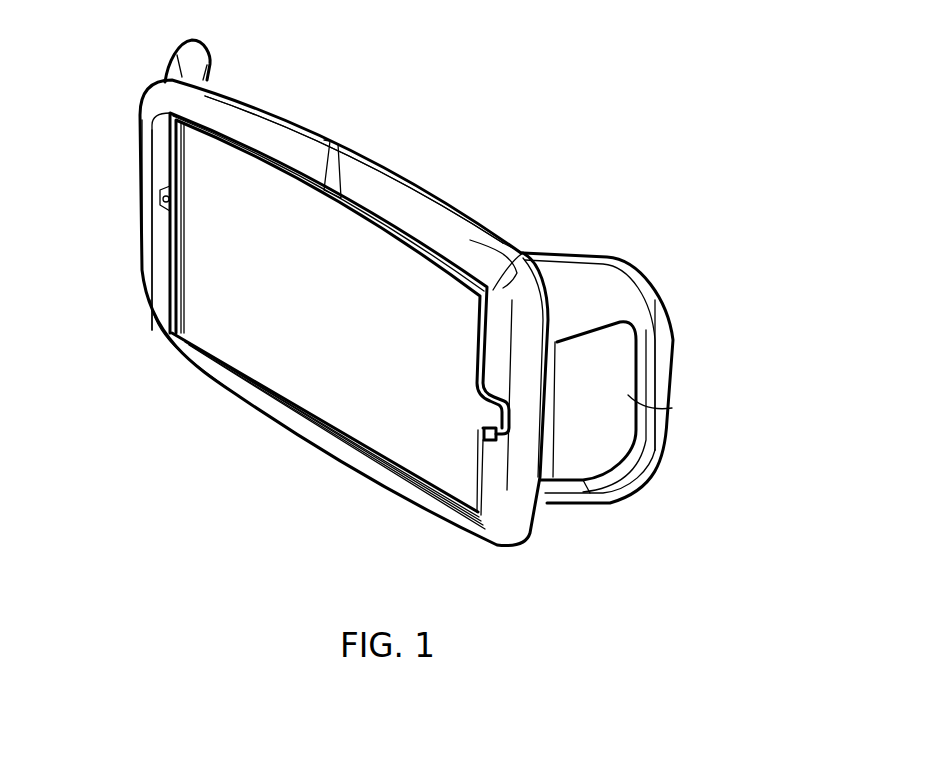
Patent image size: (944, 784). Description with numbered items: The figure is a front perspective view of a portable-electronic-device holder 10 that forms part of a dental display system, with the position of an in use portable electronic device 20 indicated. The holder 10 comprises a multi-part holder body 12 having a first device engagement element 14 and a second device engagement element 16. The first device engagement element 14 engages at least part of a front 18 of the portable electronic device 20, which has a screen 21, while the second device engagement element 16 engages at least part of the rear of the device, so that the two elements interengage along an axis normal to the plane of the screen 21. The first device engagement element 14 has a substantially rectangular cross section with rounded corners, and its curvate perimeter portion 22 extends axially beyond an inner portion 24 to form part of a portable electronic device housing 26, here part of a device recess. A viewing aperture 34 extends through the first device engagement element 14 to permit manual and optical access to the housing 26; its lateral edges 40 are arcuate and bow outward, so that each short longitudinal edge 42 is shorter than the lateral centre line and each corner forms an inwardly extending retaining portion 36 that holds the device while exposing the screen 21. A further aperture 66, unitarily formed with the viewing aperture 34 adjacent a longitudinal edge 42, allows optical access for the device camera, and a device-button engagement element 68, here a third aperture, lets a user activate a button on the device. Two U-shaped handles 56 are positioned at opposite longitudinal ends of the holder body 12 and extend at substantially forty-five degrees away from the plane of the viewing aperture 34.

The portable-electronic-device holder 10 is at (746, 341).
The holder body 12 is at (482, 230).
The first device engagement element 14 is at (267, 137).
The second device engagement element 16 is at (540, 517).
The front 18 is at (397, 450).
The portable electronic device 20 is at (333, 400).
The screen 21 is at (320, 240).
The perimeter portion 22 is at (510, 543).
The inner portion 24 is at (158, 268).
The portable electronic device housing 26 is at (233, 367).
The viewing aperture 34 is at (170, 258).
The retaining portion 36 is at (160, 117).
The lateral edge 40 is at (400, 220).
The longitudinal edge 42 is at (167, 305).
The handle 56 is at (170, 57).
The further aperture 66 is at (157, 197).
The device-button engagement element 68 is at (496, 445).